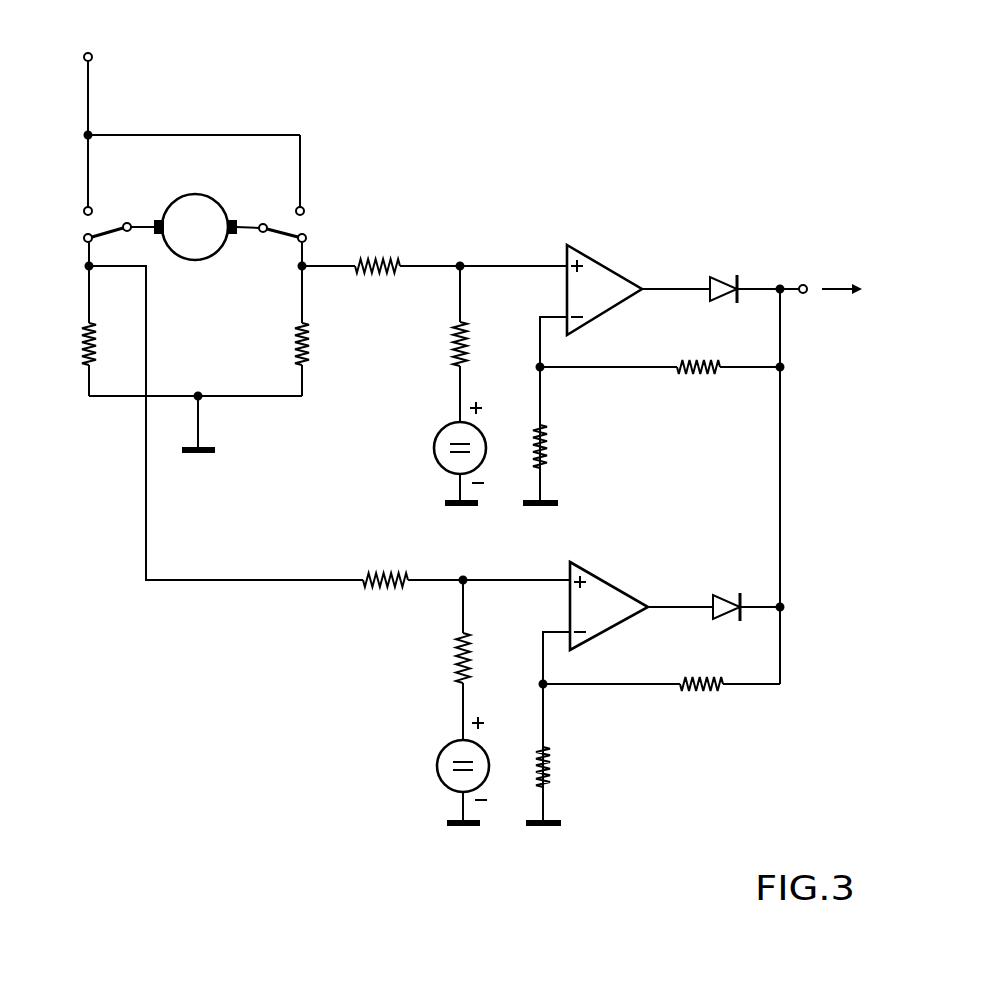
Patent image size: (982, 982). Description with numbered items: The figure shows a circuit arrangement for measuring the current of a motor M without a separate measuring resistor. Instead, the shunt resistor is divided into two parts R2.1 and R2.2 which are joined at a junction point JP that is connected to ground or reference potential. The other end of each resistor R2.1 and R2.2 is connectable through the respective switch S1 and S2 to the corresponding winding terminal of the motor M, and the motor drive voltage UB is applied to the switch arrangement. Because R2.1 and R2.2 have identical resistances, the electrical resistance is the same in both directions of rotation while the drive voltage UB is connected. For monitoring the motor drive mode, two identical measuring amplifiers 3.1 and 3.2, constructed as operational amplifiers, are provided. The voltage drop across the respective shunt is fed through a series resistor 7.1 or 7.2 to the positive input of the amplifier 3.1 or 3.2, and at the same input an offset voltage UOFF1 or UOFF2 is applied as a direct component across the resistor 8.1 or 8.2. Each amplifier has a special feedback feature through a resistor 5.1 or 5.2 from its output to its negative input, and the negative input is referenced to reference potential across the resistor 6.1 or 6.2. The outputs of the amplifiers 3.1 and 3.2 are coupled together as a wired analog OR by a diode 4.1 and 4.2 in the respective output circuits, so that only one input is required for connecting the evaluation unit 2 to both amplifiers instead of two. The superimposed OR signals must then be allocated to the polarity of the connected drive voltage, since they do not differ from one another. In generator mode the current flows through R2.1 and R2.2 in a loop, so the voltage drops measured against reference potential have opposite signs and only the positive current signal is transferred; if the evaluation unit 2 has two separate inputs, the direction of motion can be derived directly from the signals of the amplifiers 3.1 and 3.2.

The evaluation unit 2 is at (858, 311).
The first measuring amplifier 3.1 is at (621, 269).
The second measuring amplifier 3.2 is at (617, 581).
The first diode 4.1 is at (718, 278).
The second diode 4.2 is at (723, 591).
The first feedback resistor 5.1 is at (704, 375).
The second feedback resistor 5.2 is at (709, 694).
The first reference resistor 6.1 is at (555, 445).
The second reference resistor 6.2 is at (558, 765).
The first input resistor 7.1 is at (388, 262).
The second input resistor 7.2 is at (385, 575).
The first offset resistor 8.1 is at (452, 353).
The second offset resistor 8.2 is at (455, 668).
The first shunt resistor R2.1 is at (294, 322).
The second shunt resistor R2.2 is at (80, 356).
The first switch S1 is at (288, 236).
The second switch S2 is at (97, 236).
The junction point JP is at (200, 398).
The motor drive voltage UB is at (84, 53).
The first offset voltage UOFF1 is at (423, 452).
The second offset voltage UOFF2 is at (429, 770).
The motor M is at (195, 227).